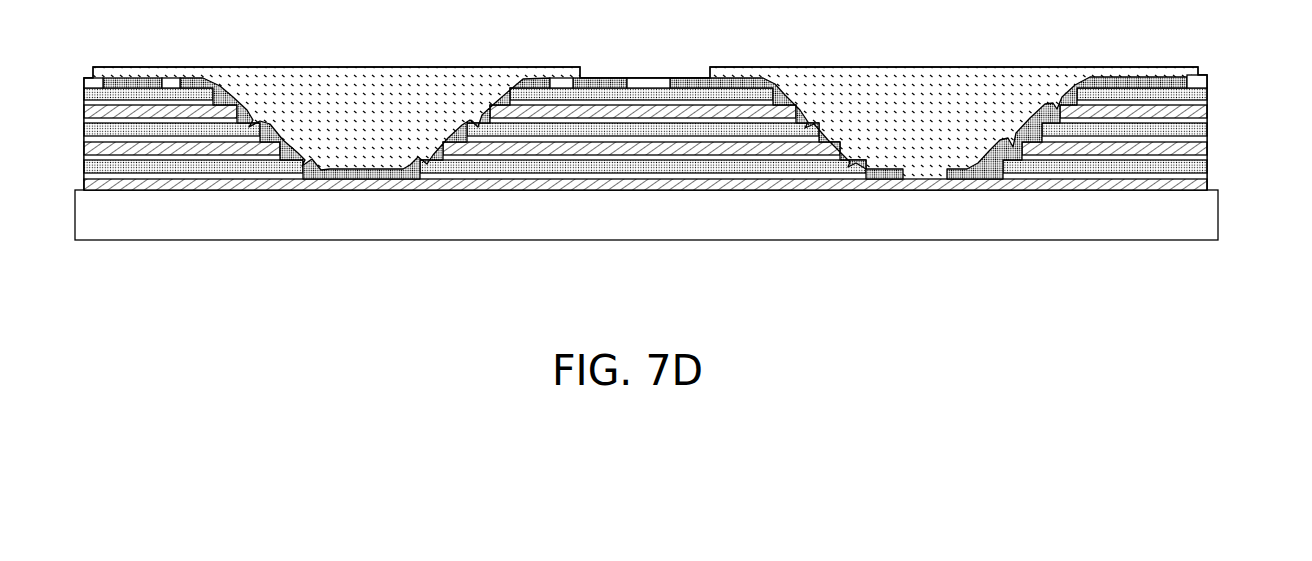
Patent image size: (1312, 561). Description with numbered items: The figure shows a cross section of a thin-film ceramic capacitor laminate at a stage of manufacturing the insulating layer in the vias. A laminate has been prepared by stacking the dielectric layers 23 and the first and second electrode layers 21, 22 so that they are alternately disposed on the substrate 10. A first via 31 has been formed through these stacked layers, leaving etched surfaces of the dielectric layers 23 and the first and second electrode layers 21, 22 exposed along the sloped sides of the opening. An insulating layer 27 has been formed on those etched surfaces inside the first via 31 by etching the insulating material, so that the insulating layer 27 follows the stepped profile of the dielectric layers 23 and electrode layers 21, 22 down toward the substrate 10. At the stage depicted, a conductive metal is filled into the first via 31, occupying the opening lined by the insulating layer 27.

The substrate 10 is at (1207, 218).
The first electrode layer 21 is at (1207, 128).
The second electrode layer 22 is at (1207, 183).
The dielectric layer 23 is at (1207, 101).
The insulating layer 27 is at (1157, 73).
The first via 31 is at (973, 77).